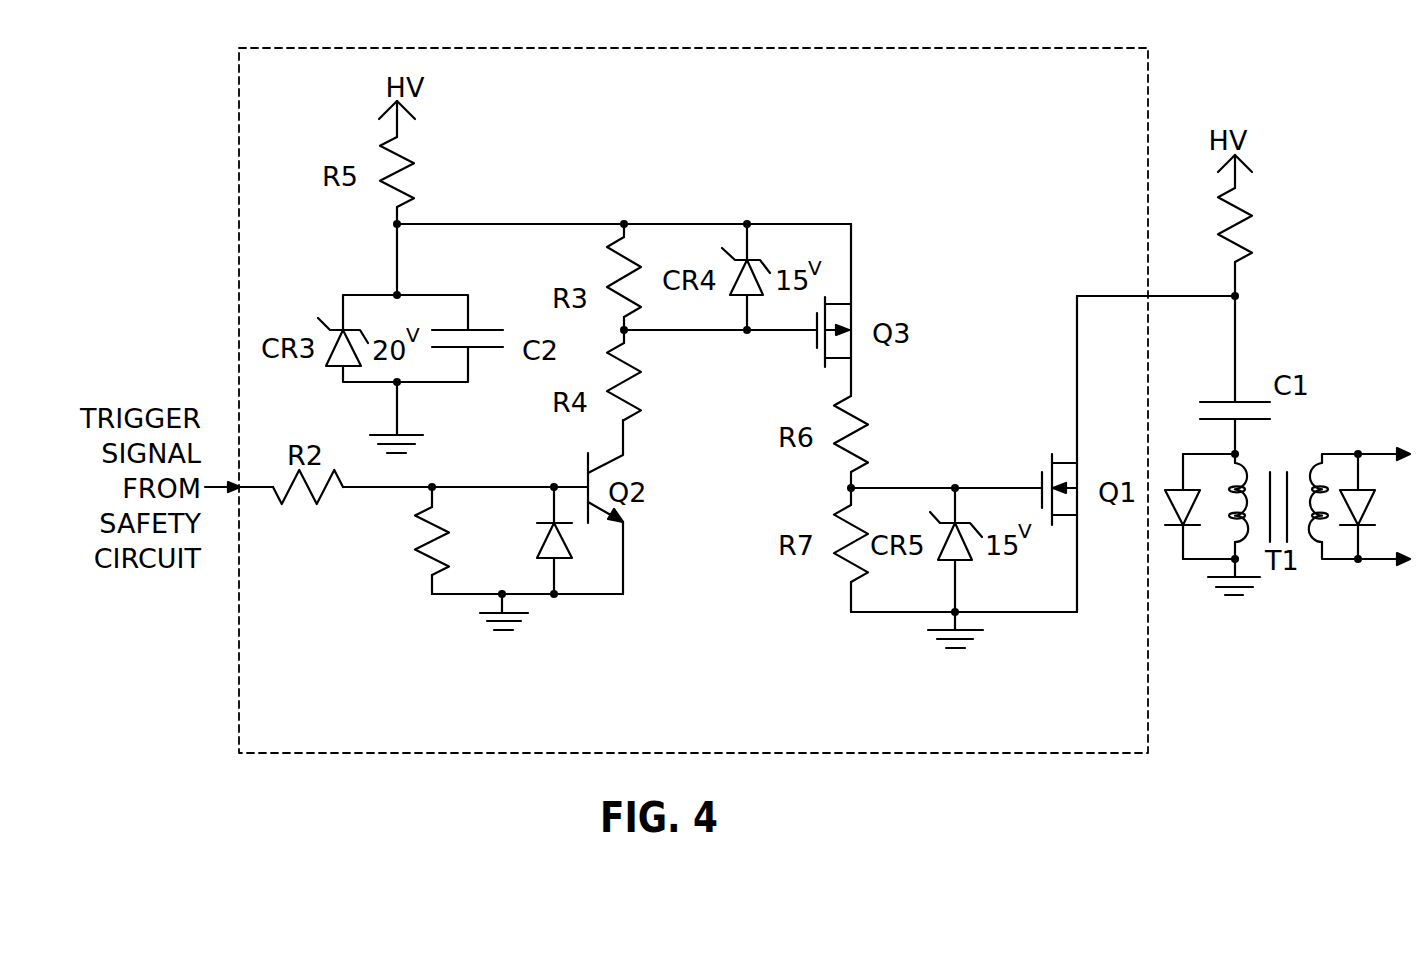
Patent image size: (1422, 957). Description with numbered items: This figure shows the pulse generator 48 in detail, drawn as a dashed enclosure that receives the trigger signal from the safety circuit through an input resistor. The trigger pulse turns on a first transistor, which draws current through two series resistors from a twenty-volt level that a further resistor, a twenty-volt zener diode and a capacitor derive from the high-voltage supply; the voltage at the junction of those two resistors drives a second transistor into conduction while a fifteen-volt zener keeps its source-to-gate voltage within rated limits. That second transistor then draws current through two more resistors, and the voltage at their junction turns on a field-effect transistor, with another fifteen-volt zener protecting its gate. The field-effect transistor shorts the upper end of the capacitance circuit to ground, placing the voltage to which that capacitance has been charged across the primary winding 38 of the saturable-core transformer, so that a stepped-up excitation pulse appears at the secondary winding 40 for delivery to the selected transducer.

The pulse generator 48 is at (239, 310).
The primary winding 38 is at (1237, 513).
The secondary winding 40 is at (1305, 475).